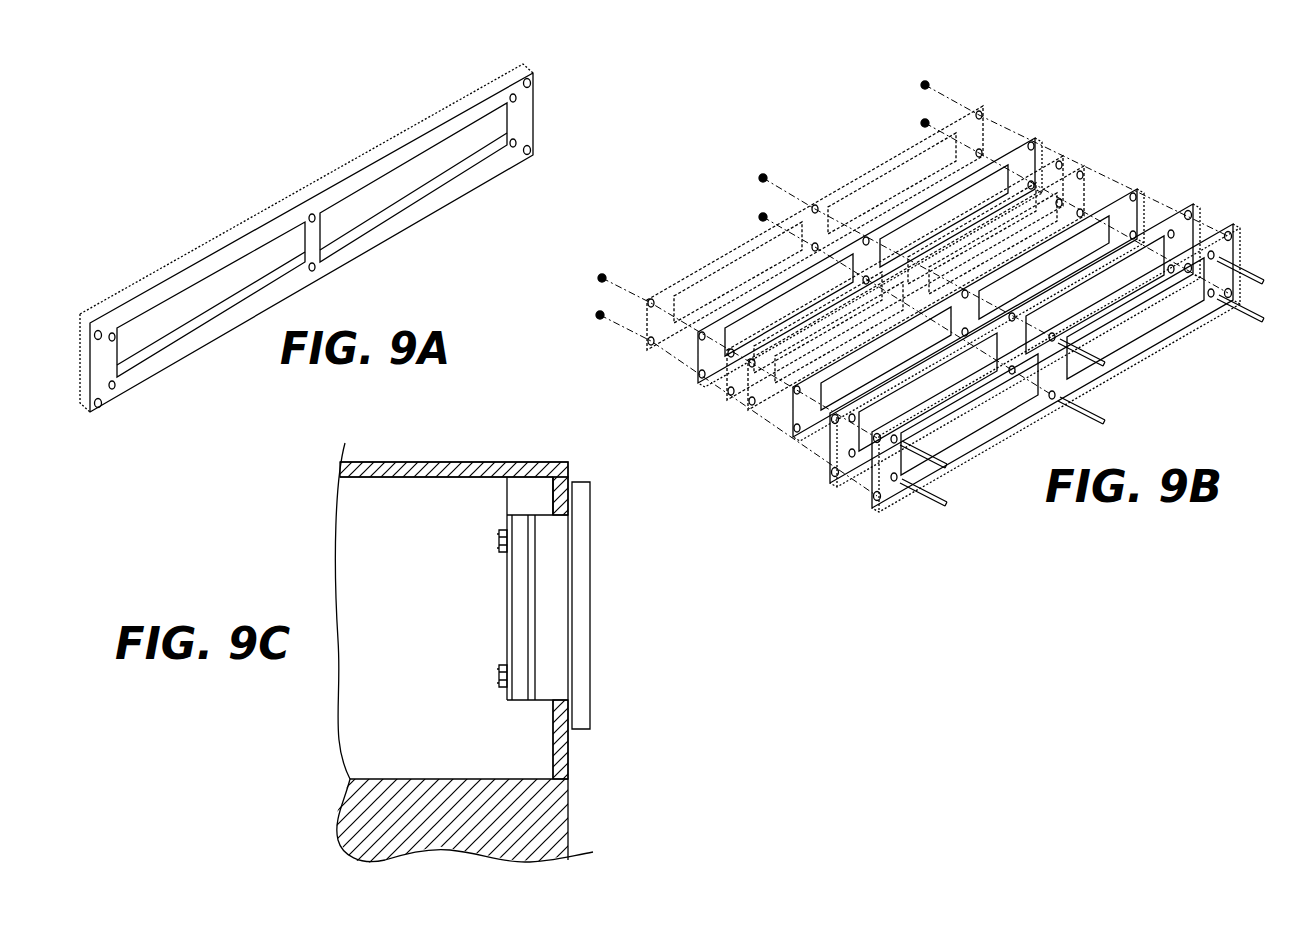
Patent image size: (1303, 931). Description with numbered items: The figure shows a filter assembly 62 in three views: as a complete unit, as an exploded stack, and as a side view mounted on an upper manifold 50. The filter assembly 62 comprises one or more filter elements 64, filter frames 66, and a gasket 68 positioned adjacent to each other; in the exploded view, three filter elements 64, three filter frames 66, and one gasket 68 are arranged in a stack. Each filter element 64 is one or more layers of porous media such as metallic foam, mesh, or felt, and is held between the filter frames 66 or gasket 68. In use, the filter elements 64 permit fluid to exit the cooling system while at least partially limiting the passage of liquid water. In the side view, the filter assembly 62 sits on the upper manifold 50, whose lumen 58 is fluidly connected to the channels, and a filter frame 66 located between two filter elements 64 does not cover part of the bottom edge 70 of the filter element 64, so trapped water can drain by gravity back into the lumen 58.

In FIG. 9C, the upper manifold 50 is at (500, 628).
In FIG. 9C, the lumen 58 is at (430, 604).
In FIG. 9A, the filter assembly 62 is at (370, 95).
In FIG. 9B, the filter assembly 62 is at (930, 292).
In FIG. 9C, the filter assembly 62 is at (603, 553).
In FIG. 9B, the filter element 64 is at (638, 358).
In FIG. 9C, the filter element 64 is at (508, 504).
In FIG. 9B, the filter frame 66 is at (1041, 133).
In FIG. 9B, the gasket 68 is at (1196, 195).
In FIG. 9C, the bottom edge 70 is at (507, 706).